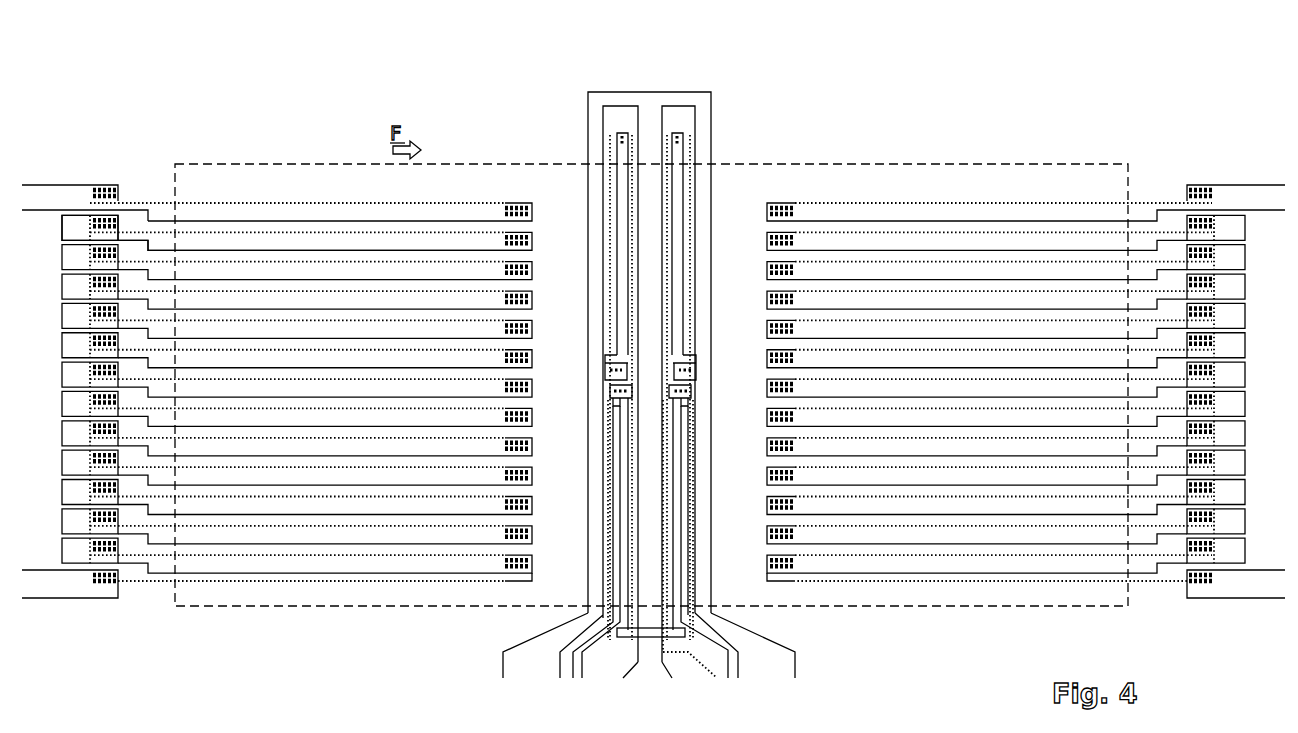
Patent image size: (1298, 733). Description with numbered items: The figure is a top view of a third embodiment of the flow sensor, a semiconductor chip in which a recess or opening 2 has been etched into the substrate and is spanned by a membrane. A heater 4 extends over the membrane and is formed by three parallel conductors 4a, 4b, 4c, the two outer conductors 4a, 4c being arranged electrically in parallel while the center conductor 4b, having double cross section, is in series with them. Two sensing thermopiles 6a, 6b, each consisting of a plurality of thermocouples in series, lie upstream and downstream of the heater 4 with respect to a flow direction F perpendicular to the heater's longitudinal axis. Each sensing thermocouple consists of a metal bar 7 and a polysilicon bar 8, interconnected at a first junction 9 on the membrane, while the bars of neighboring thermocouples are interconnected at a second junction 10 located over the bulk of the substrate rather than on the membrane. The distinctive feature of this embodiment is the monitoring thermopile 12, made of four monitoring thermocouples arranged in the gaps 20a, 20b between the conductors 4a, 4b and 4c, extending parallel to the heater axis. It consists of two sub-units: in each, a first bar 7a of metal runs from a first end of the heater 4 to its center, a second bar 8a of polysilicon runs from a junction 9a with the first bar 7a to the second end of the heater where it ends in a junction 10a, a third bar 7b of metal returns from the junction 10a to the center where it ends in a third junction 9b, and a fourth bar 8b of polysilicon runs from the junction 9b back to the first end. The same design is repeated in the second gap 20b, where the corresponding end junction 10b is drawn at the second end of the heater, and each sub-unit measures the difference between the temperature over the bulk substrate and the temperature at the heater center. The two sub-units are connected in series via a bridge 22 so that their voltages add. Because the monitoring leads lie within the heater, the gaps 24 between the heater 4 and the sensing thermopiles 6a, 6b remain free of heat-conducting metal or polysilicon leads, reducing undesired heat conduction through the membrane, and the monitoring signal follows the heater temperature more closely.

The recess or opening 2 is at (881, 91).
The heater 4 is at (578, 80).
The outer conductor 4a is at (588, 122).
The center conductor 4b is at (647, 118).
The outer conductor 4c is at (711, 150).
The sensing thermopile 6a is at (277, 327).
The sensing thermopile 6b is at (1006, 122).
The metal bar 7 is at (244, 249).
The first bar 7a is at (615, 527).
The third bar 7b is at (618, 240).
The polysilicon bar 8 is at (167, 214).
The second bar 8a is at (610, 268).
The fourth bar 8b is at (610, 478).
The first junction 9 is at (514, 205).
The junction 9a is at (606, 367).
The third junction 9b is at (606, 405).
The second junction 10 is at (101, 186).
The junction 10a is at (622, 133).
The right central strip 10b is at (687, 132).
The monitoring thermopile 12 is at (654, 364).
The gap 20a is at (609, 185).
The gap 20b is at (692, 190).
The bridge 22 is at (635, 637).
The gap 24 is at (571, 311).